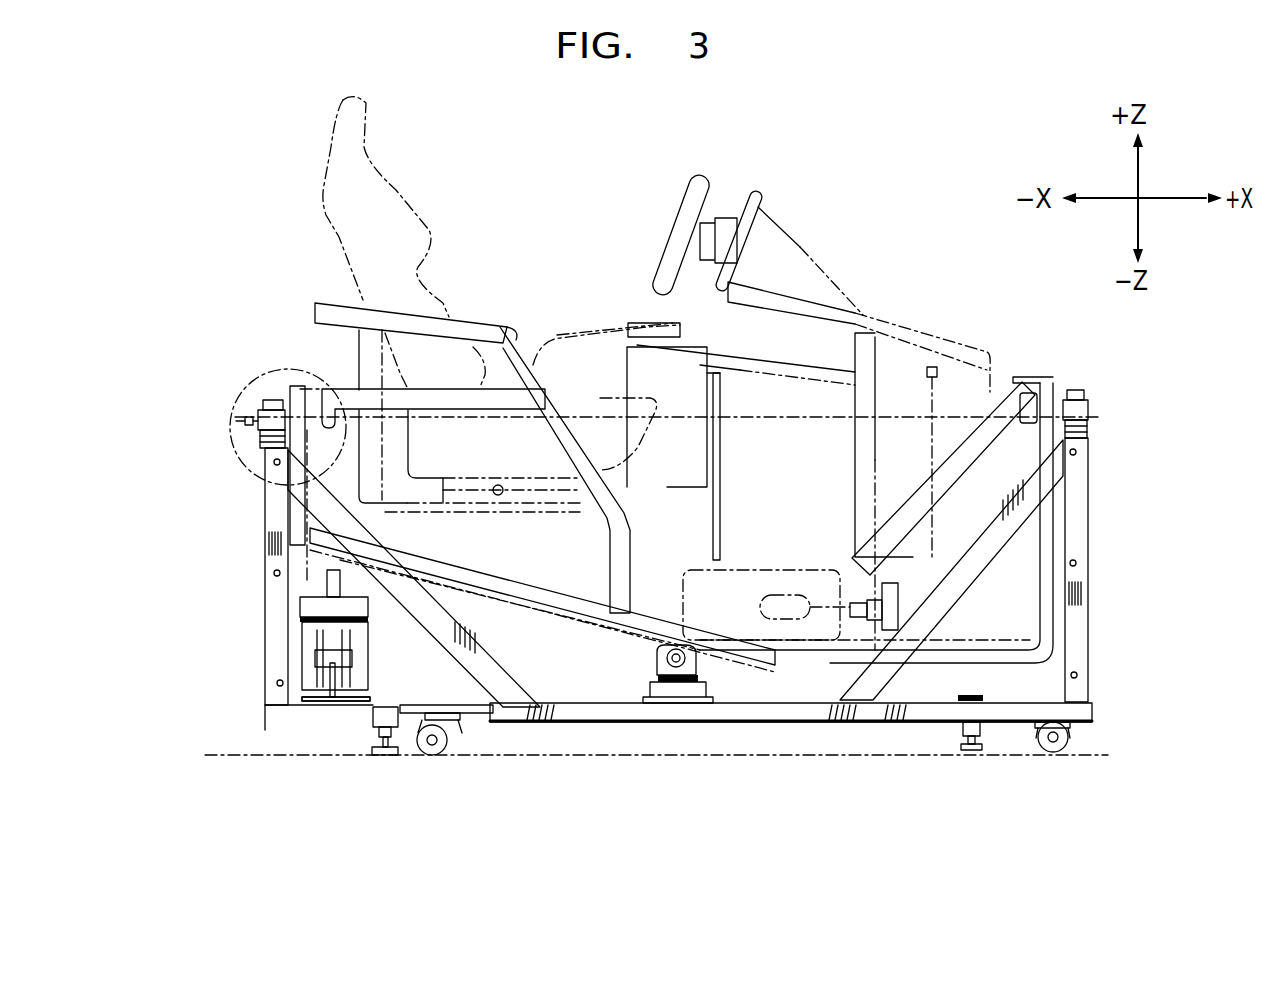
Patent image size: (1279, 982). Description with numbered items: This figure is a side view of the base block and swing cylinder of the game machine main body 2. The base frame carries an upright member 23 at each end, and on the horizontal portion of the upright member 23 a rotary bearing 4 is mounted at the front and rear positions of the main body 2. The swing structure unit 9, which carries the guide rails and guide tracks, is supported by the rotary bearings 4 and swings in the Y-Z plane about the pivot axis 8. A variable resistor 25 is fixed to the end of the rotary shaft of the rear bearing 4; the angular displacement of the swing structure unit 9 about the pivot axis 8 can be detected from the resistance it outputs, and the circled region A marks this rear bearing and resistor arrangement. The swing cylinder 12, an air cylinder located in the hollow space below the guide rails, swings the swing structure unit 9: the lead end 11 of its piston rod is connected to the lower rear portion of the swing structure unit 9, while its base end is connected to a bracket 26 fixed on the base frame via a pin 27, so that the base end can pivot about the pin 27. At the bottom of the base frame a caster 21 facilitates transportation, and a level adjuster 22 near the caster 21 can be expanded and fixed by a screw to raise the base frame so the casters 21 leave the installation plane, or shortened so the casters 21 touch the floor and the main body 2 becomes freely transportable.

The main body 2 is at (659, 726).
The rotary bearing 4 is at (276, 400).
The pivot axis 8 is at (905, 413).
The swing structure unit 9 is at (608, 638).
The lead end 11 is at (328, 583).
The swing cylinder 12 is at (298, 650).
The caster 21 is at (437, 755).
The level adjuster 22 is at (380, 742).
The upright member 23 is at (265, 522).
The variable resistor 25 is at (252, 420).
The bracket 26 is at (320, 703).
The pin 27 is at (353, 657).
The detail area A is at (248, 378).